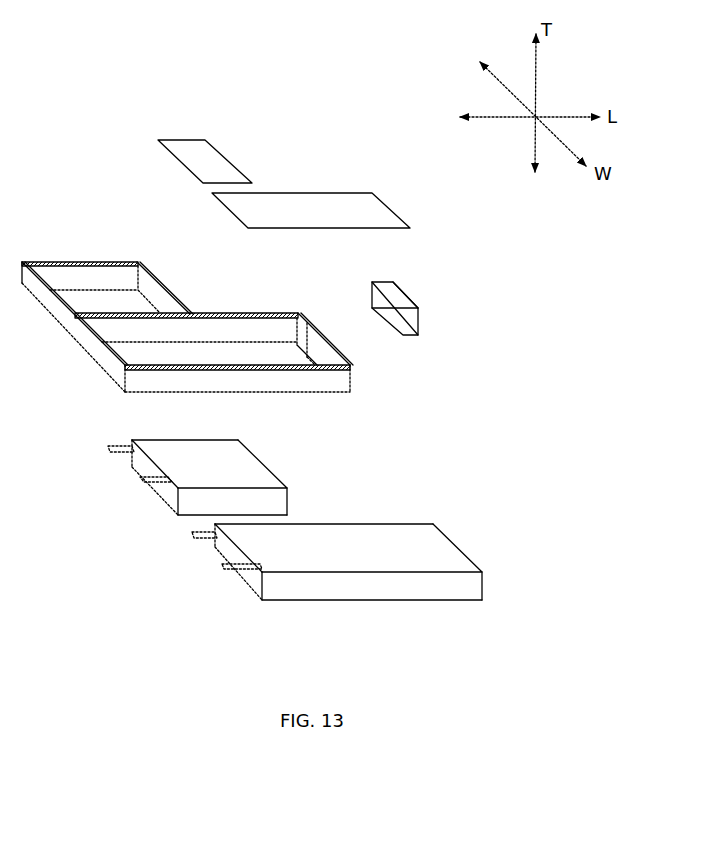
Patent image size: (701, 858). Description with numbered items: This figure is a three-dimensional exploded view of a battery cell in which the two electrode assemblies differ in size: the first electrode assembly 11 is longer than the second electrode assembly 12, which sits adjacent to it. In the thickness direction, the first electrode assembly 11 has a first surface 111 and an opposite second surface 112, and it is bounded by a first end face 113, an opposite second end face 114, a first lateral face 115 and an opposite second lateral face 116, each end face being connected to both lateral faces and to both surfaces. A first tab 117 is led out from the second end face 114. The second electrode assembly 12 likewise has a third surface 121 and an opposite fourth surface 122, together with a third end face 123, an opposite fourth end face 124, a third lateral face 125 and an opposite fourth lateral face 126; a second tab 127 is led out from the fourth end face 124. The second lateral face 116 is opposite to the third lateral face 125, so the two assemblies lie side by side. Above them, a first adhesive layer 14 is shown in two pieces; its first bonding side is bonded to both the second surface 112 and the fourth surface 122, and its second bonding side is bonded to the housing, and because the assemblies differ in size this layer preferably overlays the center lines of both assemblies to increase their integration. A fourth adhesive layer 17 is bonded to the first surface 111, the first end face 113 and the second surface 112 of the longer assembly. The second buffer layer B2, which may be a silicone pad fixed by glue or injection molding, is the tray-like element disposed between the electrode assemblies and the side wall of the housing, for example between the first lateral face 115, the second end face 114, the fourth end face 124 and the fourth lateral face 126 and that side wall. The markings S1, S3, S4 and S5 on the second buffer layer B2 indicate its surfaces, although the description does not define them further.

The first electrode assembly 11 is at (333, 568).
The first surface 111 is at (448, 603).
The second surface 112 is at (441, 546).
The first end face 113 is at (469, 552).
The second end face 114 is at (246, 576).
The first lateral face 115 is at (306, 590).
The second lateral face 116 is at (326, 523).
The first tab 117 is at (196, 536).
The second electrode assembly 12 is at (199, 478).
The third surface 121 is at (183, 517).
The fourth surface 122 is at (245, 456).
The third end face 123 is at (276, 468).
The fourth end face 124 is at (140, 479).
The third lateral face 125 is at (287, 490).
The fourth lateral face 126 is at (202, 438).
The second tab 127 is at (112, 451).
The first adhesive layer 14 is at (197, 137).
The fourth adhesive layer 17 is at (394, 290).
The second buffer layer B2 is at (187, 331).
The bottom surface S1 is at (145, 322).
The inclined surface S3 is at (160, 284).
The outer surface S4 is at (140, 384).
The top surface S5 is at (222, 313).